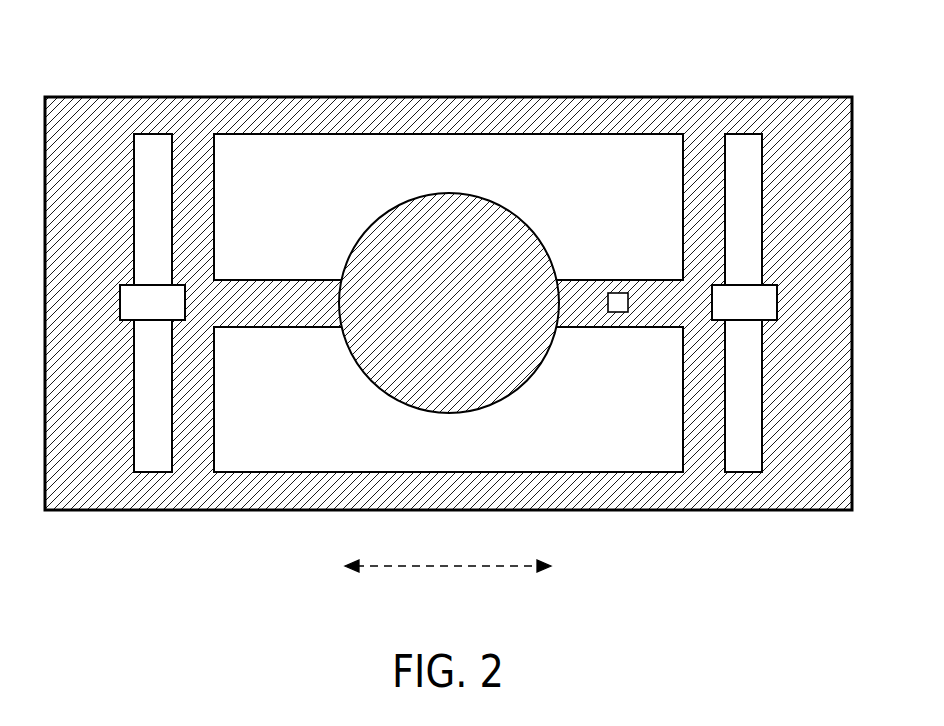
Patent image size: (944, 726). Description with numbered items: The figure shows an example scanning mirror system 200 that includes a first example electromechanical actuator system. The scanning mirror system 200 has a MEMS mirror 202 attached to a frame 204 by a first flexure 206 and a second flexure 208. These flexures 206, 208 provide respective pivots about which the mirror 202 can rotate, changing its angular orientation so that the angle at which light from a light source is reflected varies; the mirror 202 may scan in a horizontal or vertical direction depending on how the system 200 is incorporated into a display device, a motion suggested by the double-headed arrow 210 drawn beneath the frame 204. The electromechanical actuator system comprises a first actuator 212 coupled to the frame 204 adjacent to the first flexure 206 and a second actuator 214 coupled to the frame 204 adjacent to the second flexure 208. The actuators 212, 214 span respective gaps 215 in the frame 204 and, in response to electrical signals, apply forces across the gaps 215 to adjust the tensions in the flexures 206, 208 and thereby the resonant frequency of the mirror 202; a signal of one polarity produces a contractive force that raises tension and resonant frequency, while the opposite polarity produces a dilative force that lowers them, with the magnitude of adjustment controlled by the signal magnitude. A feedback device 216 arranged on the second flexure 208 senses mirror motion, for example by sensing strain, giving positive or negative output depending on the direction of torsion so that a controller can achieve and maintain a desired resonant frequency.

The scanning mirror system 200 is at (447, 50).
The MEMS mirror 202 is at (373, 257).
The frame 204 is at (627, 108).
The first flexure 206 is at (270, 302).
The second flexure 208 is at (586, 302).
The direction of motion 210 is at (448, 567).
The first actuator 212 is at (171, 314).
The second actuator 214 is at (763, 314).
The gaps 215 is at (153, 145).
The feedback device 216 is at (617, 293).